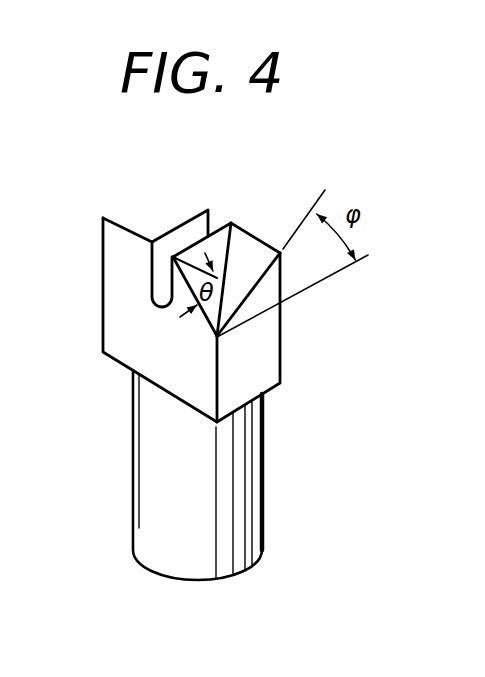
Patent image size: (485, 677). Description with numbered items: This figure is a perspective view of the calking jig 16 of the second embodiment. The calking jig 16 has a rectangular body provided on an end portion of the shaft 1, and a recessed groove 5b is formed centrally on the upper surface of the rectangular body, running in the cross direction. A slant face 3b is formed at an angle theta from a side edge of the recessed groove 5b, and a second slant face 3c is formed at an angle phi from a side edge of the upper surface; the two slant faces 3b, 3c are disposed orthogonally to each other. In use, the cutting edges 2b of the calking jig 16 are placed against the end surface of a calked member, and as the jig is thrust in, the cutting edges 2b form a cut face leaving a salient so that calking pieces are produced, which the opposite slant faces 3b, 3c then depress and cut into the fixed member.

The shaft 1 is at (247, 538).
The cutting edges 2b is at (167, 232).
The slant face 3b is at (232, 240).
The slant face 3c is at (242, 270).
The recessed groove 5b is at (227, 242).
The calking jig 16 is at (278, 477).